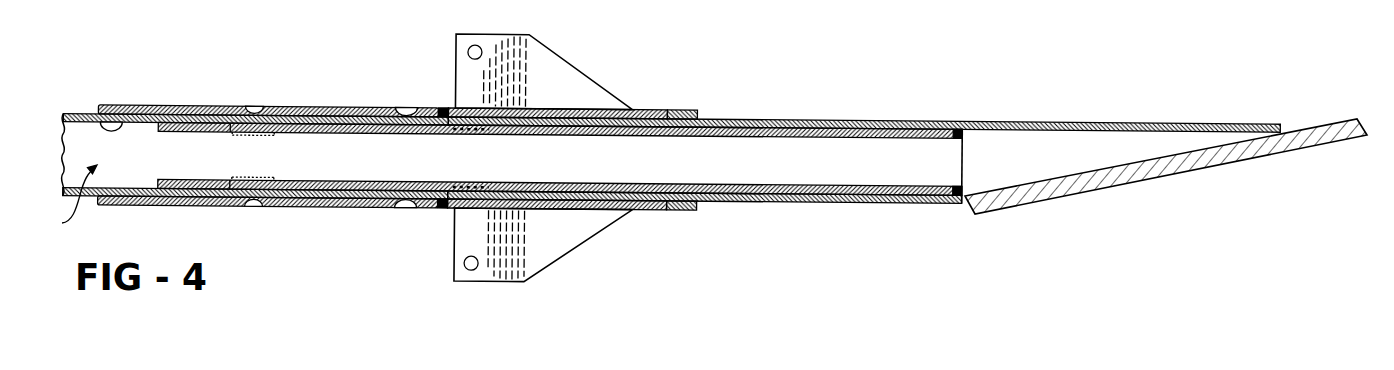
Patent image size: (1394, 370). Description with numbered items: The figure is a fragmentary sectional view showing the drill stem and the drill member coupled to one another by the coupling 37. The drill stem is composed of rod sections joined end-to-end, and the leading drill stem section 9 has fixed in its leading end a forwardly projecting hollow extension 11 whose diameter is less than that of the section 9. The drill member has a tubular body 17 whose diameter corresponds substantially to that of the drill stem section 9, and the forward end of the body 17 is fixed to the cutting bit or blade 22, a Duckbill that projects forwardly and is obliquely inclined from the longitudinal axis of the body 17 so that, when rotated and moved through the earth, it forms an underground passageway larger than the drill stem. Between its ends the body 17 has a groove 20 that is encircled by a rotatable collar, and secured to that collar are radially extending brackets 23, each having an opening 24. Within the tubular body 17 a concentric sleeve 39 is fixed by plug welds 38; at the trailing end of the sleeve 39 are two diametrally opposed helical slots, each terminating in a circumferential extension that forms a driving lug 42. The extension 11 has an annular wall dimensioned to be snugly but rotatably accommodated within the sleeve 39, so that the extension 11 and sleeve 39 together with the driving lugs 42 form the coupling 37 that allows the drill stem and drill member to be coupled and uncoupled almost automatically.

The drill stem section 9 is at (76, 113).
The hollow extension 11 is at (179, 179).
The tubular body 17 is at (741, 119).
The groove 20 is at (641, 211).
The cutting bit or blade 22 is at (1183, 171).
The bracket 23 is at (558, 72).
The opening 24 is at (467, 49).
The coupling 37 is at (67, 200).
The plug weld 38 is at (257, 106).
The sleeve 39 is at (117, 120).
The driving lug 42 is at (250, 179).